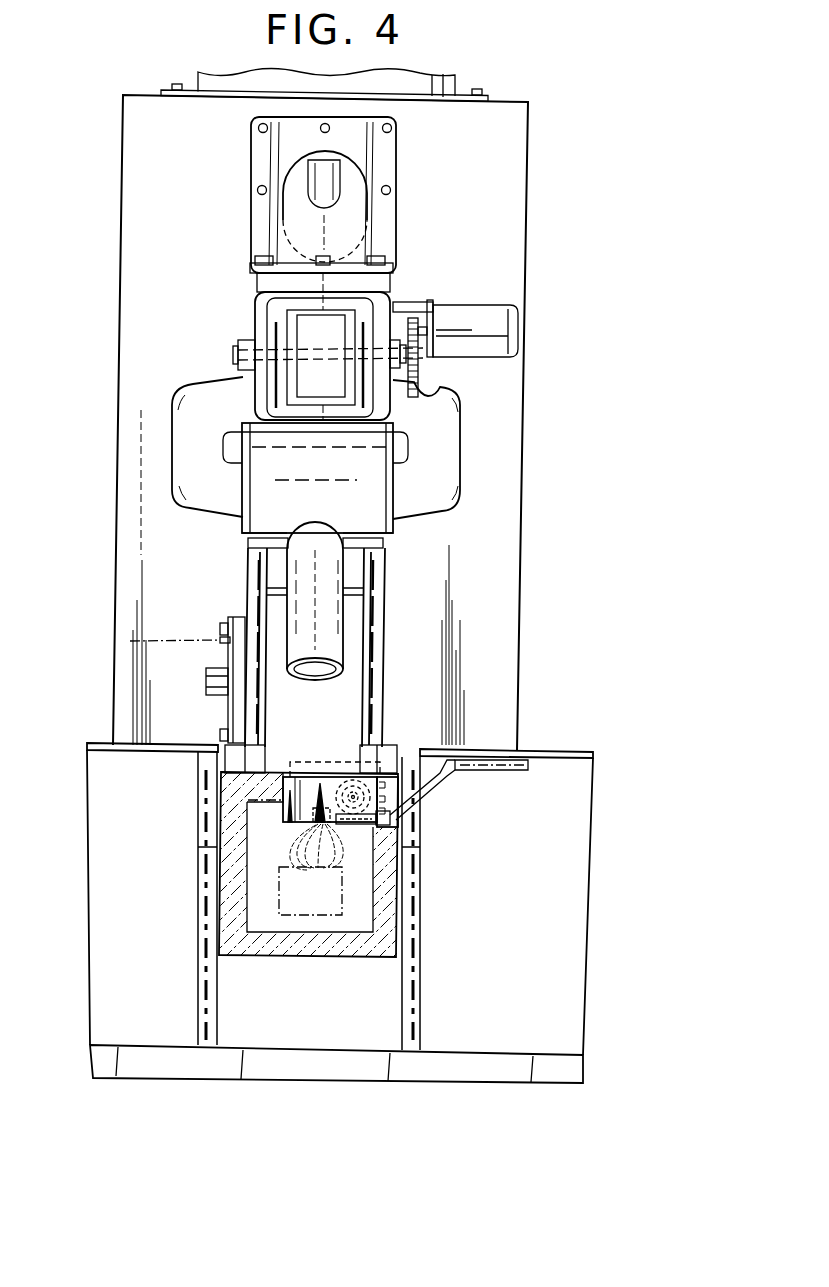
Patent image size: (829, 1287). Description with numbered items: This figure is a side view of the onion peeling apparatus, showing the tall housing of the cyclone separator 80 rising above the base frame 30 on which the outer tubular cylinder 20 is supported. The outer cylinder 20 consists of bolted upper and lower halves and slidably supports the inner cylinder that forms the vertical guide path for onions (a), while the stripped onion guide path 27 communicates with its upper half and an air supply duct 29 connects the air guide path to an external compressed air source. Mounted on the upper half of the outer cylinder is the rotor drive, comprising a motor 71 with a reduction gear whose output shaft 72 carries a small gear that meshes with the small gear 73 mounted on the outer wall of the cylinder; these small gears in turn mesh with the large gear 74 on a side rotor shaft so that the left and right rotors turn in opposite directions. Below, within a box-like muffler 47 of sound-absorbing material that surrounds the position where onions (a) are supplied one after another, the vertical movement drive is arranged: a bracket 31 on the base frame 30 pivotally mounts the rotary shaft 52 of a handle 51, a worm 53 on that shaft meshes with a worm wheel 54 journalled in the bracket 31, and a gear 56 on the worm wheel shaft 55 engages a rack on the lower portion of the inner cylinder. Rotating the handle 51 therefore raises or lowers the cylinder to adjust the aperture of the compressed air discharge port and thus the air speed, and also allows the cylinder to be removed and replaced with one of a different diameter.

The cyclone separator 80 is at (530, 207).
The small gear 73 is at (413, 302).
The output shaft 72 is at (435, 314).
The motor 71 is at (495, 304).
The large gear 74 is at (432, 397).
The outer tubular cylinder 20 is at (388, 592).
The guide path 27 is at (343, 645).
The air supply duct 29 is at (181, 636).
The base frame 30 is at (480, 749).
The muffler 47 is at (287, 957).
The bracket 31 is at (283, 812).
The worm wheel shaft 55 is at (337, 792).
The gear 56 is at (351, 781).
The worm wheel 54 is at (372, 776).
The rotary shaft 52 is at (383, 824).
The worm 53 is at (357, 827).
The onion a is at (343, 855).
The handle 51 is at (513, 773).